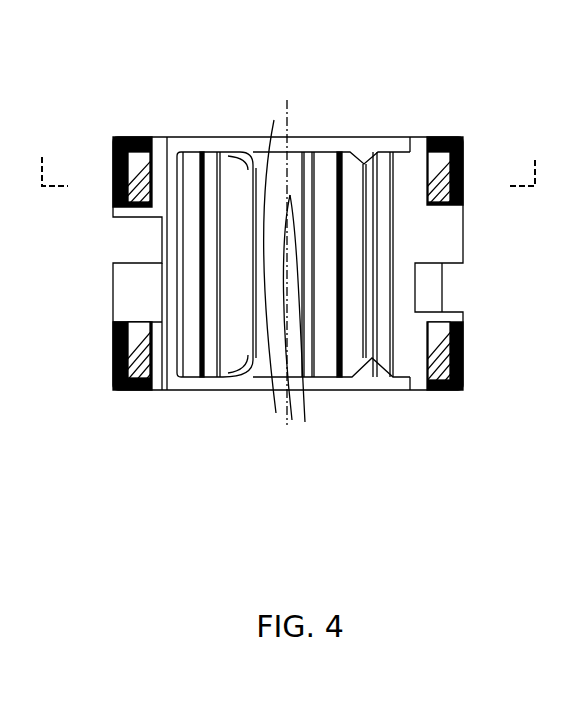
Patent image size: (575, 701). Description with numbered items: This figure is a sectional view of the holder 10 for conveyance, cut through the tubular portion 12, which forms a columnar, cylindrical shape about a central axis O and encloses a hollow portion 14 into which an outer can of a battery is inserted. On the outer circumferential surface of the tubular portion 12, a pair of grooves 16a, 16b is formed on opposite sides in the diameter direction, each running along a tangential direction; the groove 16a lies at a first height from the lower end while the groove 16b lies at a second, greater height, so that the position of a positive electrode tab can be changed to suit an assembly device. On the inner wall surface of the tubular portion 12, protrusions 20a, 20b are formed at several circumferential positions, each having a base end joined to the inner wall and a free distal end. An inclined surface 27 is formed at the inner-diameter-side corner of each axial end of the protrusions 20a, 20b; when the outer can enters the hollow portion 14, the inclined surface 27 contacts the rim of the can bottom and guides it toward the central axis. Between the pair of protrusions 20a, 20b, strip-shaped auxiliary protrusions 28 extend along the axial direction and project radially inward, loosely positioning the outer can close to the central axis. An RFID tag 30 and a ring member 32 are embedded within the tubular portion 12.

The holder for conveyance 10 is at (457, 90).
The tubular portion 12 is at (153, 134).
The hollow portion 14 is at (325, 137).
The groove 16a is at (436, 293).
The groove 16b is at (162, 238).
The protrusion 20a is at (353, 137).
The protrusion 20b is at (218, 137).
The inclined surface 27 is at (233, 180).
The auxiliary protrusion 28 is at (386, 222).
The RFID tag 30 is at (290, 283).
The ring member 32 is at (112, 158).